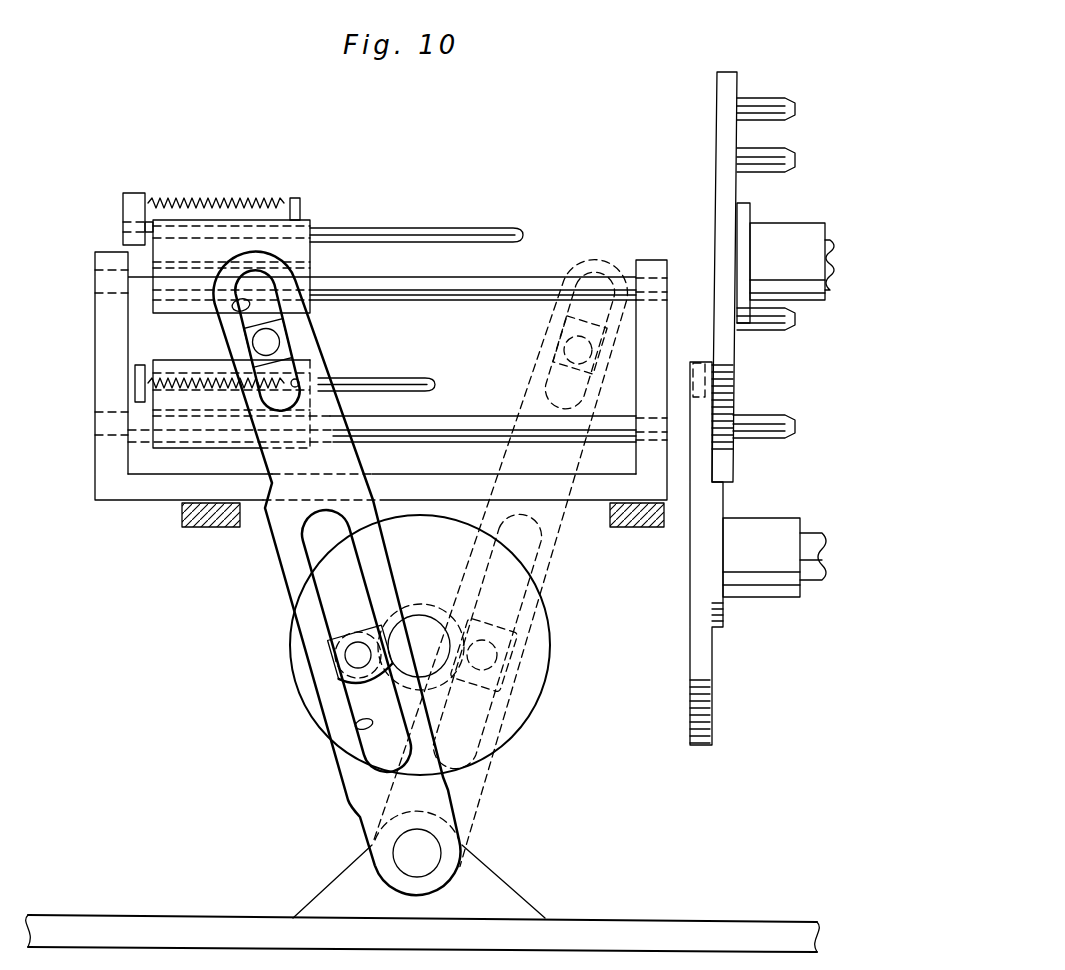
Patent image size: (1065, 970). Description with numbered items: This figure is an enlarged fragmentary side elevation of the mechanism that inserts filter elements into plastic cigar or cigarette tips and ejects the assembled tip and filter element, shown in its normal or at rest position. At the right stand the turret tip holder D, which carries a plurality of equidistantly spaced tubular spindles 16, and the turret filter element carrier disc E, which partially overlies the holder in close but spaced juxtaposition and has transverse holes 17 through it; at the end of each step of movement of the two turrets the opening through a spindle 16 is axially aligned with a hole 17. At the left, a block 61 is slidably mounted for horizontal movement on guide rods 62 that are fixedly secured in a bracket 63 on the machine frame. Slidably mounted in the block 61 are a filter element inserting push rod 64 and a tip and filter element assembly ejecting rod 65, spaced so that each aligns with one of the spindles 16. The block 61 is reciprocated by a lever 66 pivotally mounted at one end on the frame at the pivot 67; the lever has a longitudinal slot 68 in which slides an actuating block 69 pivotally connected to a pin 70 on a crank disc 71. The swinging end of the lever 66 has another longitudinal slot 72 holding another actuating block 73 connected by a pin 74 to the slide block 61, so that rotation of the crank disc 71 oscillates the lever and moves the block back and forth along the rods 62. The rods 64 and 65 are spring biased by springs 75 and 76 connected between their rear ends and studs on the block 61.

The spindles 16 is at (791, 145).
The transverse holes 17 is at (697, 363).
The block 61 is at (307, 257).
The guide rods 62 is at (480, 423).
The bracket 63 is at (107, 483).
The filter element inserting push rod 64 is at (384, 370).
The tip and filter element assembly ejecting rod 65 is at (508, 230).
The lever 66 is at (283, 557).
The pivot 67 is at (428, 852).
The longitudinal slot 68 is at (356, 728).
The actuating block 69 is at (345, 655).
The pin 70 is at (387, 662).
The crank disc 71 is at (540, 688).
The longitudinal slot 72 is at (232, 306).
The actuating block 73 is at (277, 323).
The pin 74 is at (252, 342).
The spring 75 is at (190, 385).
The spring 76 is at (209, 201).
The turret cigar or cigarette tip holder D is at (713, 78).
The turret filter element carrier disc E is at (707, 515).